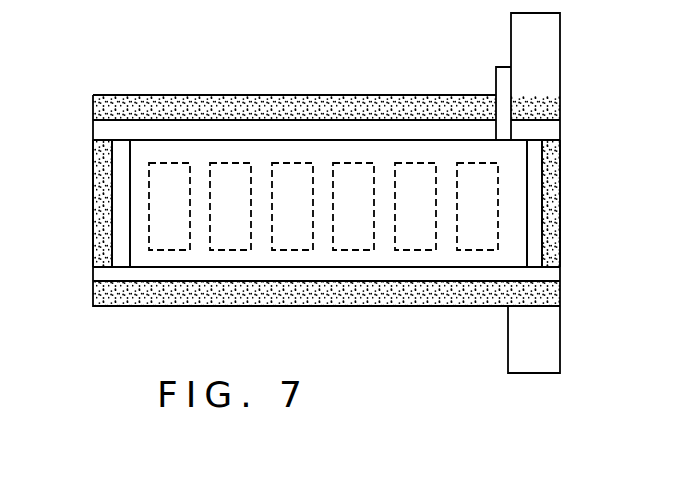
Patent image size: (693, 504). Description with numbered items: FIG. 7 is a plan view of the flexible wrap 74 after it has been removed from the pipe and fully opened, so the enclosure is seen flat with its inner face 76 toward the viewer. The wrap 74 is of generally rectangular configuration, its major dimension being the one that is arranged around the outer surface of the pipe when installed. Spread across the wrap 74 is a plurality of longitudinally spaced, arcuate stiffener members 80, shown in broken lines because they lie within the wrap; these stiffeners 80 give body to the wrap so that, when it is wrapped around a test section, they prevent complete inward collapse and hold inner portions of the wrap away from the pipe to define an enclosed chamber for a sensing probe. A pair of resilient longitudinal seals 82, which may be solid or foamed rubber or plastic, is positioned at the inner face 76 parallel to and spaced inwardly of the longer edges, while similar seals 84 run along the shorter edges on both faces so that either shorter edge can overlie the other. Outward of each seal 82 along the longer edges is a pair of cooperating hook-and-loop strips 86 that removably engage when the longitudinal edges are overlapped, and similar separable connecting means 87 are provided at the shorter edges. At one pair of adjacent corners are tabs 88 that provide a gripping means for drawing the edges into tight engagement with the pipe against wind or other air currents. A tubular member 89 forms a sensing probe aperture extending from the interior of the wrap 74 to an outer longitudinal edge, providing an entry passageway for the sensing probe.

The flexible wrap 74 is at (578, 198).
The inner face 76 is at (145, 152).
The stiffener members 80 is at (288, 160).
The longitudinal seals 82 is at (95, 128).
The seals 84 is at (122, 199).
The cooperating strips 86 is at (152, 100).
The separable connecting means 87 is at (104, 228).
The tabs 88 is at (553, 45).
The tubular member 89 is at (496, 75).